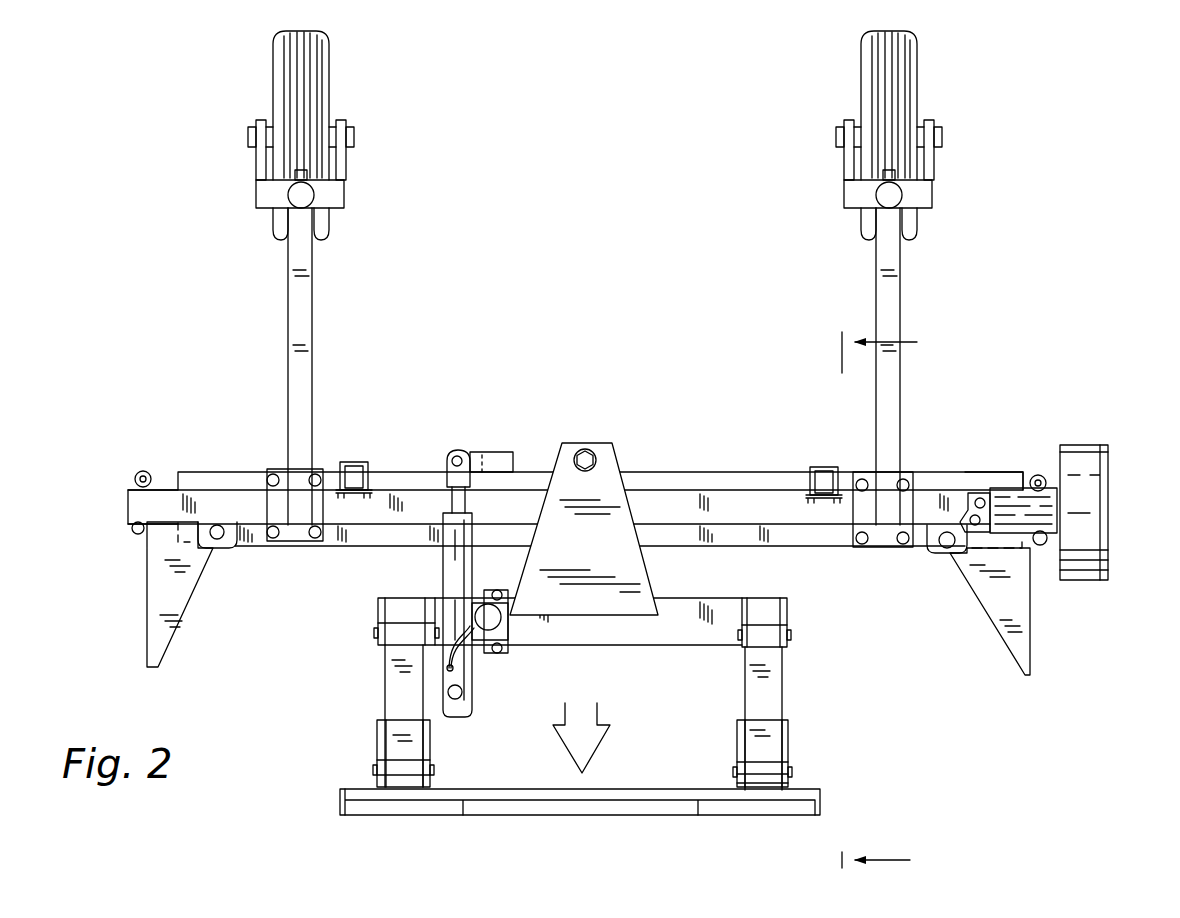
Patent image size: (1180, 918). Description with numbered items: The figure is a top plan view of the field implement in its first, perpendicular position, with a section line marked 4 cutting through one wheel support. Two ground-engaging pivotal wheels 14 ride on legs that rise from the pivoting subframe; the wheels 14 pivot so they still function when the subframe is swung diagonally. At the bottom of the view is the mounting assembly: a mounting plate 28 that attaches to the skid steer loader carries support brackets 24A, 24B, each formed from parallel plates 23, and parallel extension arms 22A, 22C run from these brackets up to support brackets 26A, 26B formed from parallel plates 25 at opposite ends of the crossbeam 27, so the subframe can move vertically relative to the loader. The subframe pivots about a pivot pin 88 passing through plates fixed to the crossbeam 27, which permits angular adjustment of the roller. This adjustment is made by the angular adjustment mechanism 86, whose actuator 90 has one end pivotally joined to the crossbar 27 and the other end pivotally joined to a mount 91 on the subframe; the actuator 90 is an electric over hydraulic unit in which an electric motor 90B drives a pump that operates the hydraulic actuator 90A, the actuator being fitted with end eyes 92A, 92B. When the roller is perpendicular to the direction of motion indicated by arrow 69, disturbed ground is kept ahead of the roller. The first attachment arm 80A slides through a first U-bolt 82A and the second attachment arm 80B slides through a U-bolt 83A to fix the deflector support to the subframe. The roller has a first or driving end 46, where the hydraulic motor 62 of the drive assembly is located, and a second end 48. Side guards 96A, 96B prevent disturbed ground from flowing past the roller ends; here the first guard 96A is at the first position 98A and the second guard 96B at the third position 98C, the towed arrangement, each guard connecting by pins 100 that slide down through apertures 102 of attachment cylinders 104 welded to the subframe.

The ground-engaging pivotal wheel 14 is at (300, 32).
The second end 48 is at (127, 472).
The apertures 102 is at (152, 478).
The attachment cylinders 104 is at (142, 470).
The pins 100 is at (130, 527).
The hydraulic motor 62 is at (1000, 477).
The first end 46 is at (1073, 435).
The third position 98C is at (138, 565).
The second guard 96B is at (145, 608).
The first position 98A is at (1055, 593).
The first guard 96A is at (1030, 650).
The first attachment arm 80A is at (368, 450).
The first U-bolt 82A is at (358, 462).
The second attachment arm 80B is at (806, 452).
The U-bolt 83A is at (825, 467).
The upper mounting block 92B is at (484, 449).
The mount 91 is at (457, 450).
The actuator 90 is at (398, 602).
The hydraulic actuator 90A is at (445, 577).
The lower mounting eye 92A is at (438, 698).
The electric motor 90B is at (510, 612).
The angular adjustment mechanism 86 is at (483, 663).
The crossbeam 27 is at (603, 646).
The pivot pin 88 is at (597, 457).
The parallel plates 25 is at (592, 600).
The support bracket 26A is at (370, 597).
The support bracket 26B is at (788, 610).
The extension arm 22A is at (387, 668).
The extension arm 22C is at (772, 703).
The support bracket 24A is at (376, 748).
The support bracket 24B is at (792, 747).
The parallel plates 23 is at (427, 729).
The mounting plate 28 is at (360, 814).
The arrow 69 is at (602, 745).
The section line 4- 4 is at (896, 593).